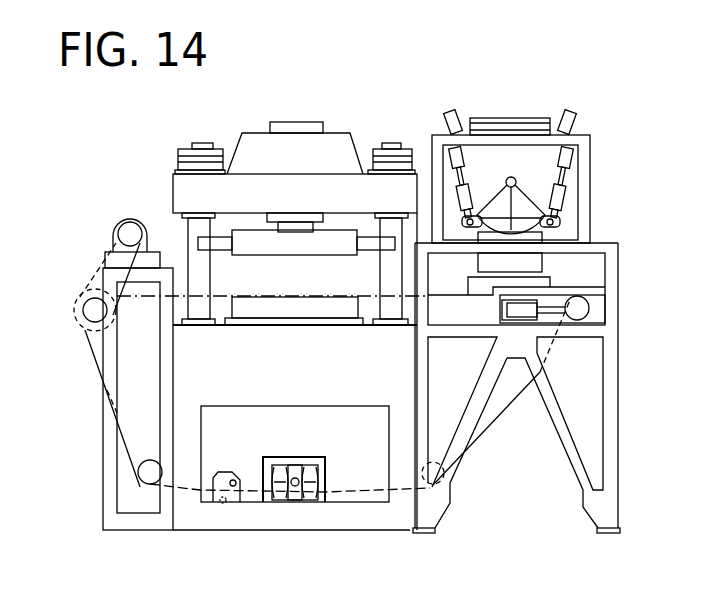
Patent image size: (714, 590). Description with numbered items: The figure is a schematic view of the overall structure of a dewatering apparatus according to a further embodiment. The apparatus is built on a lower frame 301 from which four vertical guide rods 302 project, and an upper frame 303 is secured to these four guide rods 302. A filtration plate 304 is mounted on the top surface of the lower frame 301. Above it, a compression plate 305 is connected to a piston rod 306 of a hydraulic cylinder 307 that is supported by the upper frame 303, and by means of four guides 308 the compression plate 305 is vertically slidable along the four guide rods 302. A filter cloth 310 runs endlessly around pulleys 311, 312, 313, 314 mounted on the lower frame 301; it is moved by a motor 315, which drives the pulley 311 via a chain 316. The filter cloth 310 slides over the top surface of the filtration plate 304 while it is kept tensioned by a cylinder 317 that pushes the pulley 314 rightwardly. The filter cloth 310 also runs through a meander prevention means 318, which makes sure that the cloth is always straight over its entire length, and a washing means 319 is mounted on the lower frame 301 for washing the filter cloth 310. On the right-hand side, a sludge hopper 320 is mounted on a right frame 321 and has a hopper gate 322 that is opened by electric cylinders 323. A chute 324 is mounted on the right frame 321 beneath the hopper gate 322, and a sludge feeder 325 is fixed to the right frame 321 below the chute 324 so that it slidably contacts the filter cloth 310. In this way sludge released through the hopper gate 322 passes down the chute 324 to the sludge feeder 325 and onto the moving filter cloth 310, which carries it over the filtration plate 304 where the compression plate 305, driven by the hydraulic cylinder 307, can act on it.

The lower frame 301 is at (202, 532).
The vertical guide rods 302 is at (212, 270).
The upper frame 303 is at (238, 148).
The filtration plate 304 is at (335, 310).
The compression plate 305 is at (240, 227).
The piston rod 306 is at (300, 213).
The hydraulic cylinder 307 is at (303, 122).
The guides 308 is at (198, 240).
The filter cloth 310 is at (477, 448).
The pulley 311 is at (95, 313).
The pulley 312 is at (140, 480).
The pulley 313 is at (440, 487).
The pulley 314 is at (590, 308).
The motor 315 is at (118, 226).
The chain 316 is at (90, 282).
The cylinder 317 is at (525, 318).
The meander prevention means 318 is at (297, 503).
The washing means 319 is at (232, 503).
The sludge hopper 320 is at (497, 117).
The right frame 321 is at (592, 143).
The hopper gate 322 is at (527, 203).
The electric cylinders 323 is at (583, 95).
The chute 324 is at (542, 240).
The sludge feeder 325 is at (550, 281).